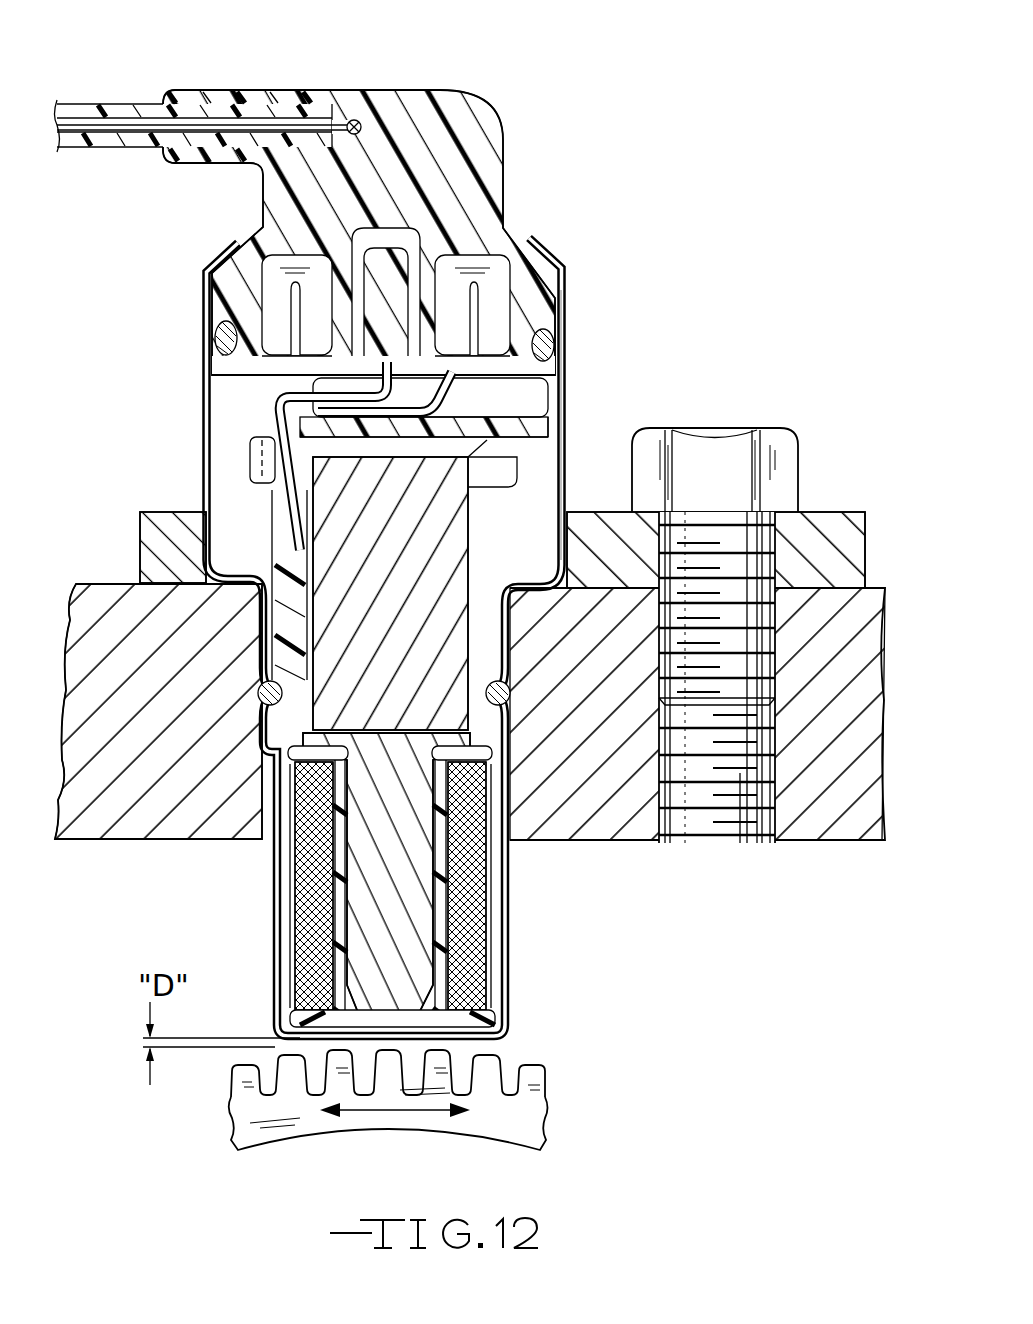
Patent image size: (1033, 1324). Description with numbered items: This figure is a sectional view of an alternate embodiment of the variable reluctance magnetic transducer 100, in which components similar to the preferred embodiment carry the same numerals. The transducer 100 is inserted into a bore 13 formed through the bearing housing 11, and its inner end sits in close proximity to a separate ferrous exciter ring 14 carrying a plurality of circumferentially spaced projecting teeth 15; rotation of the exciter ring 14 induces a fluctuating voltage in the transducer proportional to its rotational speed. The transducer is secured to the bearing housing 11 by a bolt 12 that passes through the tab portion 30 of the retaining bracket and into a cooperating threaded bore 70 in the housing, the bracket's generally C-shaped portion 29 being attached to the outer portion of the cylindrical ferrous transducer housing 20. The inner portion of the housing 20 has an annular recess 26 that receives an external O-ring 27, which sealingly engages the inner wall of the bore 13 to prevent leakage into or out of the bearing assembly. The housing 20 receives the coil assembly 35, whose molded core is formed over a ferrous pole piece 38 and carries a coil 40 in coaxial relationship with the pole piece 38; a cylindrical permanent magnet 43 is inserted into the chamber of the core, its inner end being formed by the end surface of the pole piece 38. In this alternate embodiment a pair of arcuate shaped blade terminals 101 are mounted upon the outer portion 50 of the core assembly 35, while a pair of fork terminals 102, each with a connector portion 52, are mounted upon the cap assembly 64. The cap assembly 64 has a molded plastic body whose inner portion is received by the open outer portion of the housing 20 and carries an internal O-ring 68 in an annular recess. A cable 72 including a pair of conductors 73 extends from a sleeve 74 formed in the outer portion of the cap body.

The alternate embodiment of the transducer 100 is at (640, 115).
The cap assembly 64 is at (467, 123).
The cable 72 is at (122, 112).
The conductors 73 is at (110, 128).
The sleeve 74 is at (263, 100).
The fork terminals 102 is at (290, 270).
The blade terminals 101 is at (293, 308).
The connector portion 52 is at (277, 333).
The internal O-ring 68 is at (547, 347).
The transducer housing 20 is at (205, 415).
The core outer portion 50 is at (528, 400).
The coil assembly 35 is at (323, 507).
The C-shaped portion 29 is at (150, 512).
The bearing housing 11 is at (97, 600).
The magnet 43 is at (435, 518).
The bolt 12 is at (717, 448).
The tab portion 30 is at (818, 520).
The threaded bore 70 is at (713, 822).
The annular recess 26 is at (513, 680).
The external O-ring 27 is at (513, 703).
The bore 13 is at (520, 853).
The pole piece 38 is at (413, 920).
The coil 40 is at (480, 968).
The teeth 15 is at (537, 1073).
The exciter ring 14 is at (303, 1110).